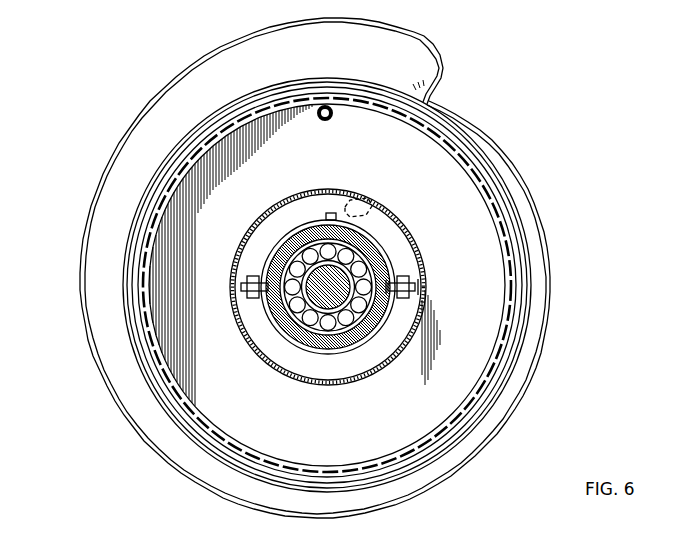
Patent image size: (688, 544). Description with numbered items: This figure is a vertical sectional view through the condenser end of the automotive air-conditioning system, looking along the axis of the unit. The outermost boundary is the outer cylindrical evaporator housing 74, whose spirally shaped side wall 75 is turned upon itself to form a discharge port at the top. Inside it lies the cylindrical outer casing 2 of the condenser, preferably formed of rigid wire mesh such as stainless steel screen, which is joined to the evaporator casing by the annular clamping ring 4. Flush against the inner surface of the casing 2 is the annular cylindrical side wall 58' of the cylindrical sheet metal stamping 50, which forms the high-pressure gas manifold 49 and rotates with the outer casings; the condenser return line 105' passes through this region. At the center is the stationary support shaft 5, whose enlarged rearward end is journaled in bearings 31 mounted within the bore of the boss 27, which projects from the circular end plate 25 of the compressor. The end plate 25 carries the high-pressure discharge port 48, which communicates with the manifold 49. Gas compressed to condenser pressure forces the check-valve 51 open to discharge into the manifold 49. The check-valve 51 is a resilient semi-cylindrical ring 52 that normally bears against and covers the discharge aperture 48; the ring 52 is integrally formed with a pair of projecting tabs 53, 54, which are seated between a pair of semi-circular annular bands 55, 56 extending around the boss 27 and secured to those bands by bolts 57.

The cylindrical outer casing 2 is at (485, 187).
The annular clamping ring 4 is at (488, 166).
The stationary support shaft 5 is at (343, 267).
The circular end plate 25 is at (420, 314).
The boss 27 is at (300, 313).
The bearings 31 is at (290, 233).
The high-pressure discharge port 48 is at (368, 205).
The high-pressure gas manifold 49 is at (312, 370).
The cylindrical sheet metal stamping 50 is at (336, 372).
The check-valve 51 is at (323, 203).
The semi-cylindrical ring 52 is at (400, 260).
The projecting tab 53 is at (241, 287).
The projecting tab 54 is at (418, 288).
The semi-circular annular band 55 is at (270, 257).
The semi-circular annular band 56 is at (297, 340).
The bolts 57 is at (252, 298).
The annular cylindrical side wall 58' is at (368, 255).
The outer cylindrical evaporator housing 74 is at (422, 497).
The spirally shaped side wall 75 is at (100, 182).
The condenser return line 105' is at (354, 126).